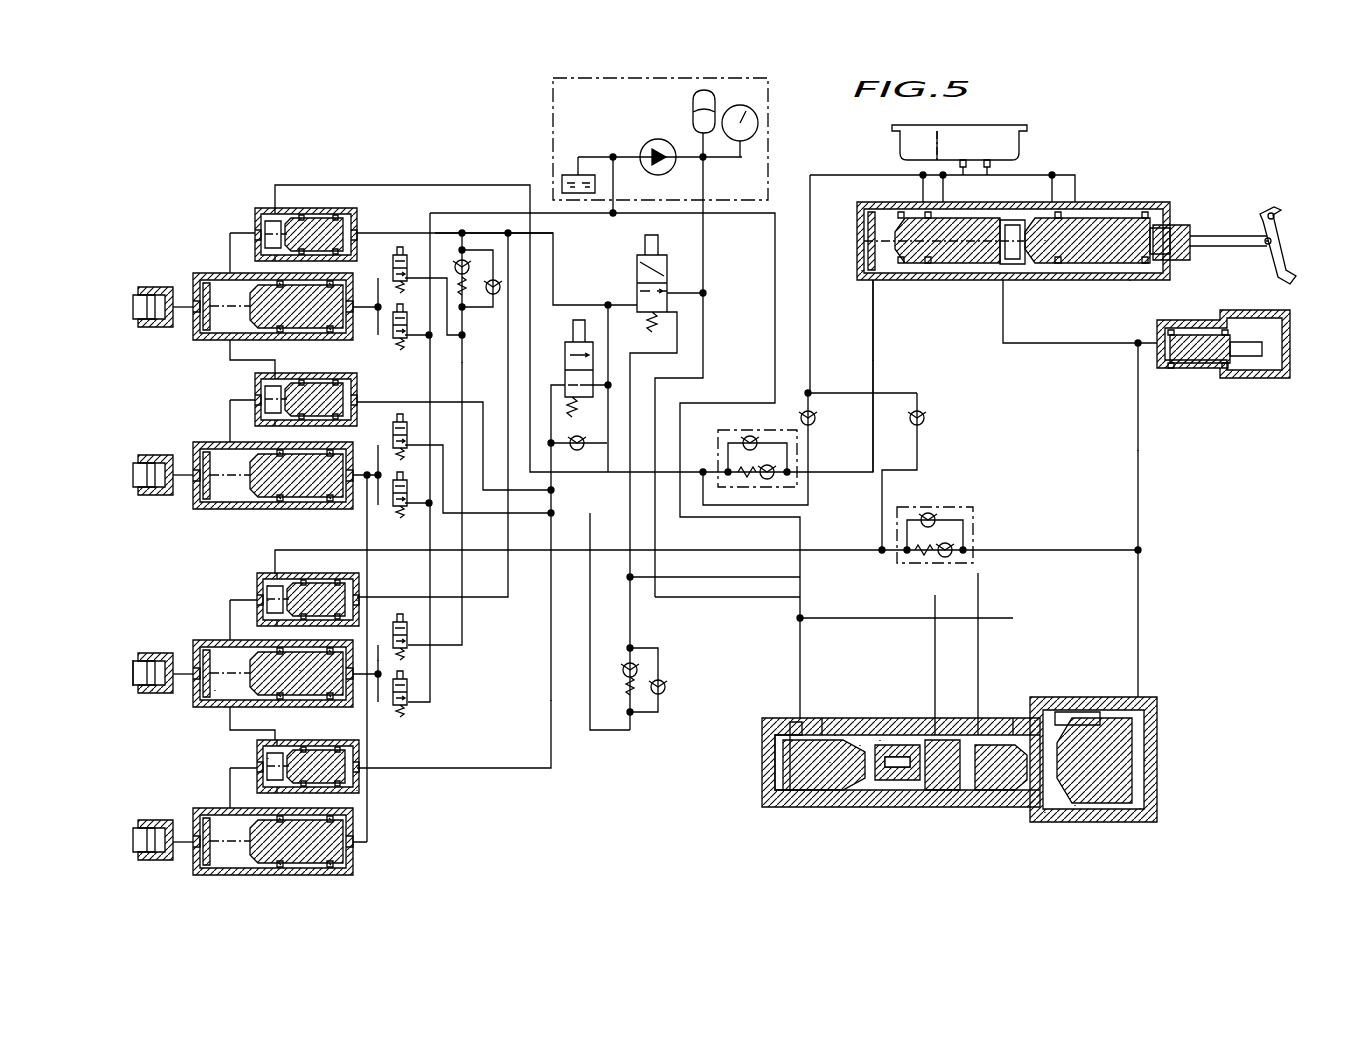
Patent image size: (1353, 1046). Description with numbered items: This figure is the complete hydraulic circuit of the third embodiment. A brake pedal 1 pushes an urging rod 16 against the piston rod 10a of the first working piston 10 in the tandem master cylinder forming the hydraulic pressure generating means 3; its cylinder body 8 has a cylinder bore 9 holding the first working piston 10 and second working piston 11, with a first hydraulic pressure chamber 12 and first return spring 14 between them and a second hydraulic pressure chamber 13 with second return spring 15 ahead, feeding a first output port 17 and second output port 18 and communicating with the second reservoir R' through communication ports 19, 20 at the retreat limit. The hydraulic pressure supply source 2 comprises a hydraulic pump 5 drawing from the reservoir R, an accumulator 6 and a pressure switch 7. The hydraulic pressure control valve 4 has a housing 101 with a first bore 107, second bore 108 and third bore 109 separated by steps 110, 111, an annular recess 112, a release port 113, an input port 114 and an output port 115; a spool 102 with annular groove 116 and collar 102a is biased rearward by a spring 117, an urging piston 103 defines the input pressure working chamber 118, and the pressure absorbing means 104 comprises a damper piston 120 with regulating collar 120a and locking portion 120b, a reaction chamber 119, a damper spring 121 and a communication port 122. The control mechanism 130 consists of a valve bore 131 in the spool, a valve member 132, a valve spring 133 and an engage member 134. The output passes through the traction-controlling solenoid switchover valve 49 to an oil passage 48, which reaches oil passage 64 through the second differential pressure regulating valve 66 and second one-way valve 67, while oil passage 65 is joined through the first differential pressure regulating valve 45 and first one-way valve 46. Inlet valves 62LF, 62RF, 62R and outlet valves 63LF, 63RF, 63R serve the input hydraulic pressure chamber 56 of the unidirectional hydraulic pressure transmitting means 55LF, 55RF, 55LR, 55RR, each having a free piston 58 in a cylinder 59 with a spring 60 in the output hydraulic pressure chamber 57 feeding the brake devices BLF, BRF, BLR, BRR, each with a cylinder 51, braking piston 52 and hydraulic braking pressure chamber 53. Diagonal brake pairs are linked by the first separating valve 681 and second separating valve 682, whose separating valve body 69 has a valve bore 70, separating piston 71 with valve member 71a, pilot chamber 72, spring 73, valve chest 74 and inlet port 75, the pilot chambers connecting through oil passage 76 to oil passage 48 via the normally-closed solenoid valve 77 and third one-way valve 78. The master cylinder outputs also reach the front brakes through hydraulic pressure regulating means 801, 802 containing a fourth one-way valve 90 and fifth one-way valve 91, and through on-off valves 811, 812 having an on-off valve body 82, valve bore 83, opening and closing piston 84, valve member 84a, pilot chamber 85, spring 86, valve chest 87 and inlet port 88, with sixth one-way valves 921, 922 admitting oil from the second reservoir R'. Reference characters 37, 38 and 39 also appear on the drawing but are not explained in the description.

The brake pedal 1 is at (1289, 276).
The hydraulic pressure supply source 2 is at (772, 138).
The hydraulic pressure generating means 3 is at (1083, 198).
The hydraulic pressure control valve 4 is at (1084, 695).
The hydraulic pump 5 is at (648, 148).
The accumulator 6 is at (693, 105).
The pressure switch 7 is at (750, 138).
The cylinder body 8 is at (1130, 280).
The cylinder bore 9 is at (911, 268).
The first working piston 10 is at (1135, 212).
The piston rod 10a is at (1184, 225).
The second working piston 11 is at (952, 260).
The first hydraulic pressure chamber 12 is at (1023, 265).
The second hydraulic pressure chamber 13 is at (898, 212).
The first return spring 14 is at (1045, 265).
The second return spring 15 is at (868, 218).
The urging rod 16 is at (1213, 236).
The first output port 17 is at (1000, 268).
The second output port 18 is at (865, 273).
The communication port 19 is at (1055, 212).
The communication port 20 is at (925, 212).
The stroke simulator 37 is at (1232, 380).
The hydraulic line 38 is at (1138, 453).
The hydraulic line 39 is at (873, 318).
The first differential pressure regulating valve 45 is at (622, 679).
The first one-way valve 46 is at (660, 680).
The oil passage 48 is at (552, 272).
The traction-controlling solenoid switchover valve 49 is at (664, 261).
The cylinder 51 is at (150, 690).
The braking piston 52 is at (136, 658).
The hydraulic braking pressure chamber 53 is at (155, 658).
The unidirectional hydraulic pressure transmitting means 55RF is at (208, 272).
The unidirectional hydraulic pressure transmitting means 55LR is at (258, 509).
The unidirectional hydraulic pressure transmitting means 55LF is at (193, 652).
The unidirectional hydraulic pressure transmitting means 55RR is at (278, 875).
The input hydraulic pressure chamber 56 is at (378, 660).
The output hydraulic pressure chamber 57 is at (215, 690).
The free piston 58 is at (314, 672).
The cylinder 59 is at (278, 700).
The spring 60 is at (200, 690).
The inlet valve 62RF is at (394, 251).
The inlet valve 62R is at (393, 422).
The inlet valve 62LF is at (400, 614).
The outlet valve 63RF is at (401, 352).
The outlet valve 63R is at (404, 518).
The outlet valve 63LF is at (405, 704).
The oil passage 64 is at (462, 363).
The oil passage 65 is at (590, 621).
The second differential pressure regulating valve 66 is at (460, 262).
The second one-way valve 67 is at (493, 297).
The second separating valve 682 is at (330, 377).
The first separating valve 681 is at (320, 743).
The separating valve body 69 is at (357, 790).
The valve bore 70 is at (268, 780).
The separating piston 71 is at (324, 767).
The valve member 71a is at (268, 758).
The pilot chamber 72 is at (357, 765).
The spring 73 is at (300, 748).
The valve chest 74 is at (270, 790).
The inlet port 75 is at (275, 742).
The oil passage 76 is at (551, 690).
The normally-closed type solenoid valve 77 is at (562, 360).
The third one-way valve 78 is at (584, 449).
The hydraulic pressure regulating means 802 is at (760, 425).
The hydraulic pressure regulating means 801 is at (928, 505).
The on-off valve 812 is at (357, 210).
The on-off valve 811 is at (257, 590).
The on-off valve body 82 is at (335, 580).
The valve bore 83 is at (268, 600).
The opening and closing piston 84 is at (325, 605).
The valve member 84a is at (268, 585).
The pilot chamber 85 is at (357, 600).
The spring 86 is at (275, 620).
The valve chest 87 is at (300, 578).
The inlet port 88 is at (275, 573).
The fourth one-way valve 90 is at (950, 543).
The fifth one-way valve 91 is at (932, 514).
The sixth one-way valve 922 is at (818, 418).
The sixth one-way valve 921 is at (927, 418).
The housing 101 is at (973, 792).
The spool 102 is at (1075, 760).
The collar 102a is at (1075, 805).
The urging piston 103 is at (1145, 760).
The pressure absorbing means 104 is at (860, 746).
The first bore 107 is at (800, 790).
The second bore 108 is at (870, 790).
The third bore 109 is at (1140, 808).
The step 110 is at (835, 734).
The step 111 is at (1045, 812).
The annular recess 112 is at (1013, 792).
The release port 113 is at (1035, 720).
The input port 114 is at (937, 722).
The output port 115 is at (979, 722).
The annular groove 116 is at (990, 790).
The spring 117 is at (1070, 712).
The input pressure working chamber 118 is at (1150, 712).
The reaction chamber 119 is at (880, 740).
The damper piston 120 is at (783, 760).
The regulating collar 120a is at (822, 716).
The locking portion 120b is at (845, 760).
The damper spring 121 is at (775, 742).
The communication port 122 is at (798, 720).
The control mechanism 130 is at (905, 777).
The valve bore 131 is at (940, 790).
The valve member 132 is at (933, 740).
The valve spring 133 is at (880, 748).
The engage member 134 is at (882, 773).
The right front wheel brake device BRF is at (150, 284).
The left rear wheel brake device BLR is at (152, 450).
The left front wheel brake device BLF is at (163, 701).
The right rear wheel brake device BRR is at (148, 818).
The reservoir R is at (576, 167).
The second reservoir R' is at (943, 149).